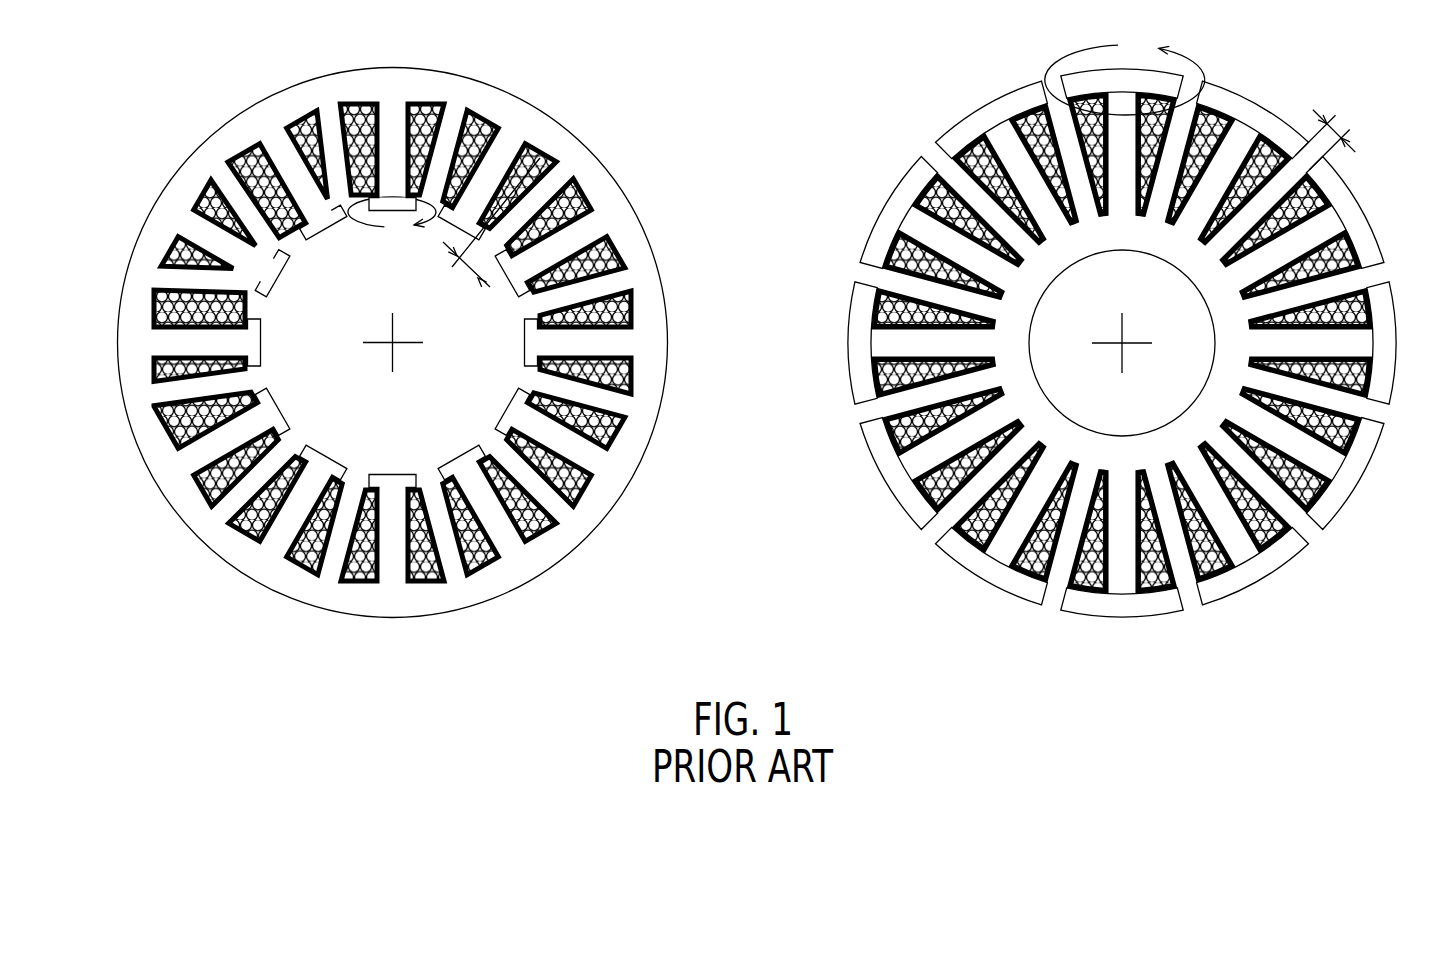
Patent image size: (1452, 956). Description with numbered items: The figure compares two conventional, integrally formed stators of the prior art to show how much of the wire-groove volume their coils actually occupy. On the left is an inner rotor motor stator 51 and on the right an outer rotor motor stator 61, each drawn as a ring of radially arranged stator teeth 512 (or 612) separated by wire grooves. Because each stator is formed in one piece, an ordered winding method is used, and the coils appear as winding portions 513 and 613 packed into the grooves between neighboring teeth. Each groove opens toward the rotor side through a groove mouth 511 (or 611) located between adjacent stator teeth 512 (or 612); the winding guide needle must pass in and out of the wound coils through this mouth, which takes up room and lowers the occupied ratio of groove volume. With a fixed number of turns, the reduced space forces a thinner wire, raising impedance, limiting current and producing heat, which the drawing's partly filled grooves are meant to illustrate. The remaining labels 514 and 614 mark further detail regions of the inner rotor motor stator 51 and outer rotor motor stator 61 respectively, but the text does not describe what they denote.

The inner rotor motor stator 51 is at (393, 399).
The groove mouth 511 is at (463, 272).
The stator tooth 512 is at (278, 408).
The winding portion 513 is at (275, 213).
The coil 514 is at (438, 518).
The outer rotor motor stator 61 is at (1091, 371).
The groove mouth 611 is at (1338, 114).
The stator tooth 612 is at (880, 208).
The winding portion 613 is at (1320, 483).
The tooth 614 is at (958, 178).